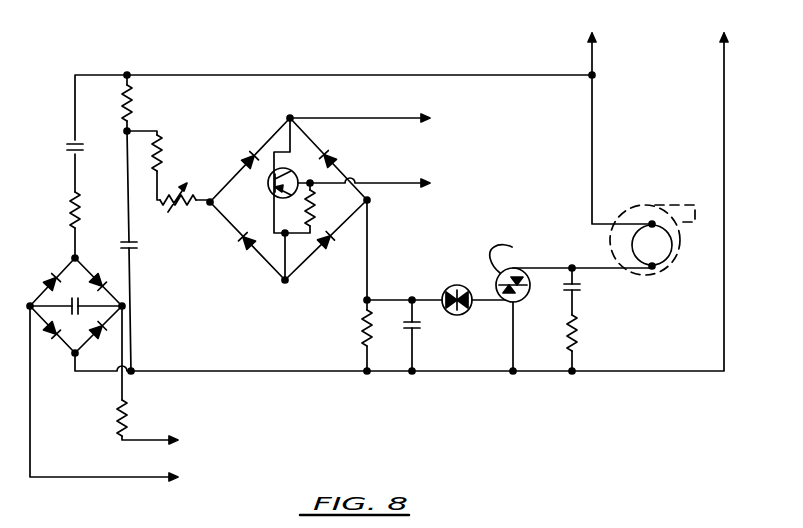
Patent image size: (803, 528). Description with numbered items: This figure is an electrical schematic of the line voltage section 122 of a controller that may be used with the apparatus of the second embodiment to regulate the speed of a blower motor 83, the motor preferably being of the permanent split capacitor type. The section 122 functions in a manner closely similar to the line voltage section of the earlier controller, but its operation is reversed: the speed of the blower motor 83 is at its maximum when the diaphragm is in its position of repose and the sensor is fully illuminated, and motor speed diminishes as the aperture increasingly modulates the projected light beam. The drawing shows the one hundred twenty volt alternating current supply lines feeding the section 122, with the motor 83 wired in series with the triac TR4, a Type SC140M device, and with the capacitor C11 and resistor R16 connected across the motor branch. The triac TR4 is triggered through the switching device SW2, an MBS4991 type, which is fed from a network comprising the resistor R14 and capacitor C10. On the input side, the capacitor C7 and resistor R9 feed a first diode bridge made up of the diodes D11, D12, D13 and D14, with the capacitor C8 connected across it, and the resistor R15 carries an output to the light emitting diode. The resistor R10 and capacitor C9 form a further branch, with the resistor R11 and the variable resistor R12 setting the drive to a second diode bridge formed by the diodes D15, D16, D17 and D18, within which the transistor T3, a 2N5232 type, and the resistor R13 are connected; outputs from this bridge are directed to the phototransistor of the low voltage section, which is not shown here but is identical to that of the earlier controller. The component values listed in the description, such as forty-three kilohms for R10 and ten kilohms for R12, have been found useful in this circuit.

The line voltage section 122 is at (503, 103).
The blower motor 83 is at (672, 257).
The resistor R9 is at (60, 210).
The resistor R10 is at (146, 103).
The resistor R11 is at (175, 153).
The resistor R12 is at (181, 207).
The resistor R13 is at (330, 208).
The resistor R14 is at (349, 329).
The resistor R15 is at (142, 418).
The resistor R16 is at (595, 333).
The capacitor C7 is at (61, 148).
The capacitor C8 is at (74, 299).
The capacitor C9 is at (145, 249).
The capacitor C10 is at (431, 335).
The capacitor C11 is at (591, 294).
The diode D11 is at (45, 271).
The diode D12 is at (108, 272).
The diode D13 is at (54, 341).
The diode D14 is at (105, 341).
The diode D15 is at (240, 150).
The diode D16 is at (350, 158).
The diode D17 is at (235, 250).
The diode D18 is at (338, 251).
The transistor T3 is at (267, 184).
The switch SW2 is at (456, 289).
The triac TR4 is at (519, 271).